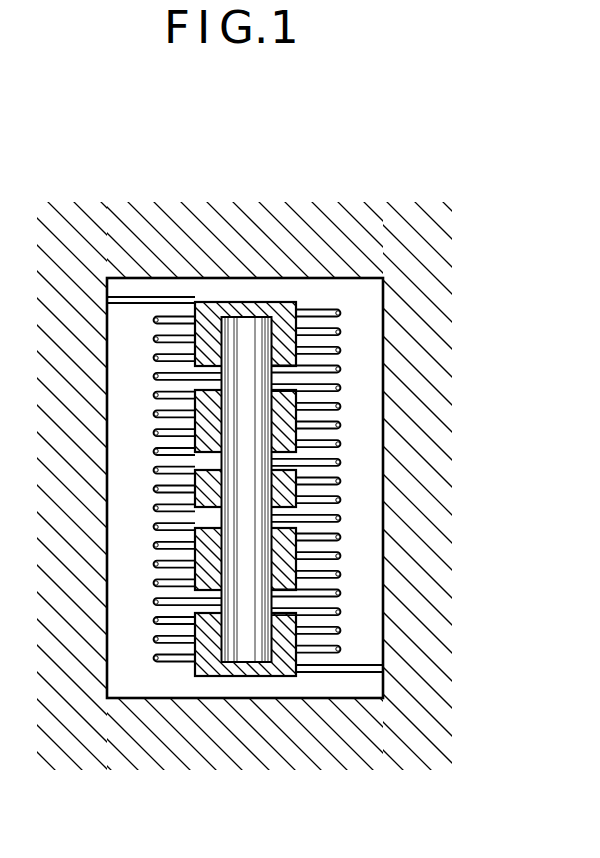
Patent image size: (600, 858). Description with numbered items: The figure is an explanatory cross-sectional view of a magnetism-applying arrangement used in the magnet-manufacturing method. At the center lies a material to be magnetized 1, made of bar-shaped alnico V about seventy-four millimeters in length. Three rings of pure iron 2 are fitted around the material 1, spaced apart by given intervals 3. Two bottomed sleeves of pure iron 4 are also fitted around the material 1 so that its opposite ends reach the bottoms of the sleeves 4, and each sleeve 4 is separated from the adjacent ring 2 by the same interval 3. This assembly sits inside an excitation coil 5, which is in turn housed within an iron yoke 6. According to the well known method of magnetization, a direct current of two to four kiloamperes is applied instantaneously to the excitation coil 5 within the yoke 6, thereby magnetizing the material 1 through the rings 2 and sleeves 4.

The material to be magnetized 1 is at (245, 328).
The rings of pure iron 2 is at (290, 431).
The intervals 3 is at (283, 468).
The bottomed sleeves of pure iron 4 is at (282, 314).
The excitation coil 5 is at (329, 573).
The iron yoke 6 is at (365, 250).